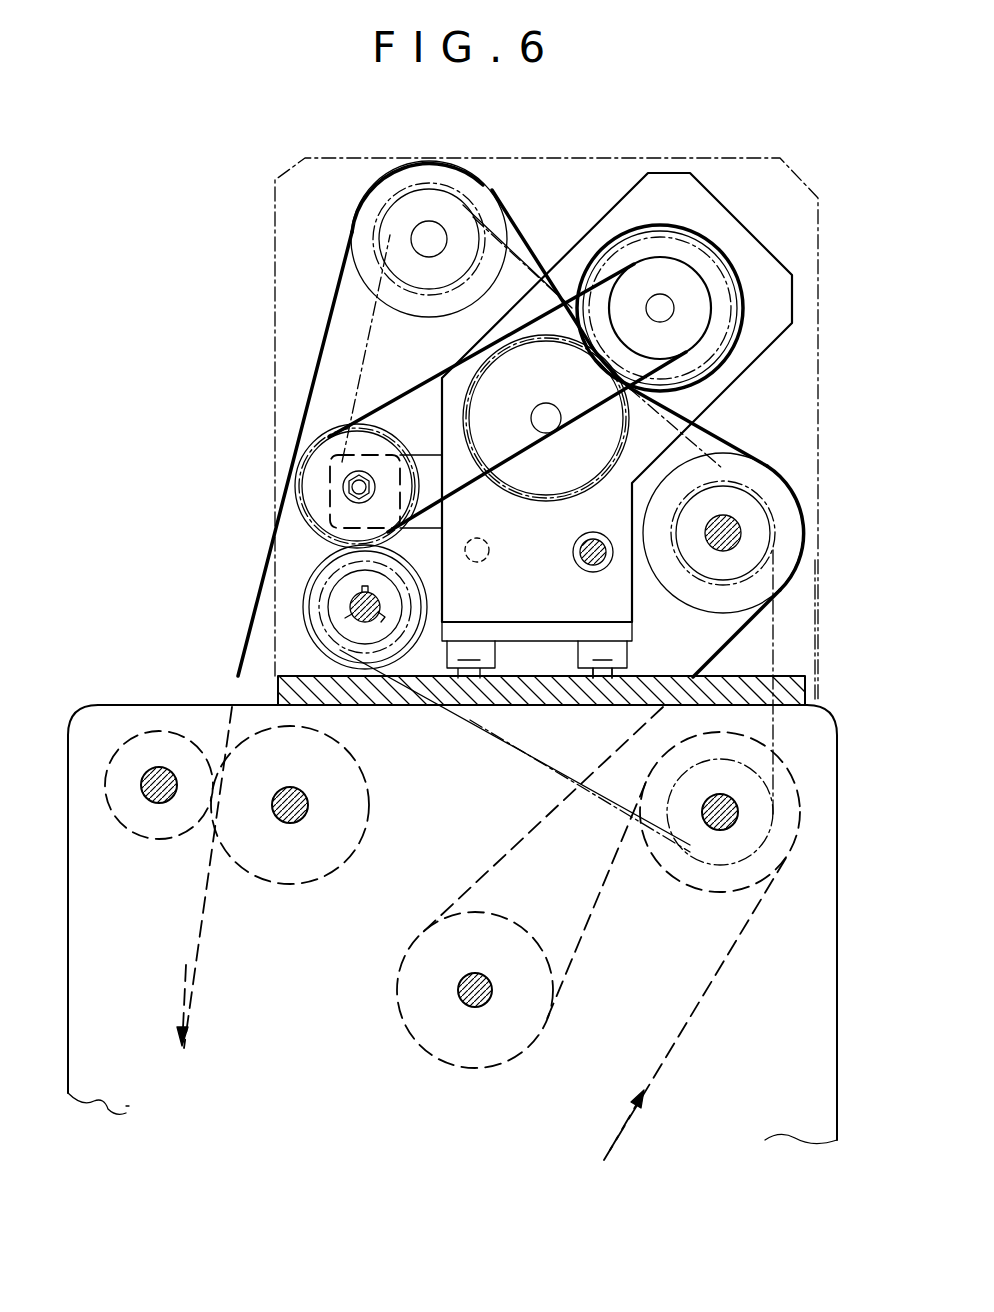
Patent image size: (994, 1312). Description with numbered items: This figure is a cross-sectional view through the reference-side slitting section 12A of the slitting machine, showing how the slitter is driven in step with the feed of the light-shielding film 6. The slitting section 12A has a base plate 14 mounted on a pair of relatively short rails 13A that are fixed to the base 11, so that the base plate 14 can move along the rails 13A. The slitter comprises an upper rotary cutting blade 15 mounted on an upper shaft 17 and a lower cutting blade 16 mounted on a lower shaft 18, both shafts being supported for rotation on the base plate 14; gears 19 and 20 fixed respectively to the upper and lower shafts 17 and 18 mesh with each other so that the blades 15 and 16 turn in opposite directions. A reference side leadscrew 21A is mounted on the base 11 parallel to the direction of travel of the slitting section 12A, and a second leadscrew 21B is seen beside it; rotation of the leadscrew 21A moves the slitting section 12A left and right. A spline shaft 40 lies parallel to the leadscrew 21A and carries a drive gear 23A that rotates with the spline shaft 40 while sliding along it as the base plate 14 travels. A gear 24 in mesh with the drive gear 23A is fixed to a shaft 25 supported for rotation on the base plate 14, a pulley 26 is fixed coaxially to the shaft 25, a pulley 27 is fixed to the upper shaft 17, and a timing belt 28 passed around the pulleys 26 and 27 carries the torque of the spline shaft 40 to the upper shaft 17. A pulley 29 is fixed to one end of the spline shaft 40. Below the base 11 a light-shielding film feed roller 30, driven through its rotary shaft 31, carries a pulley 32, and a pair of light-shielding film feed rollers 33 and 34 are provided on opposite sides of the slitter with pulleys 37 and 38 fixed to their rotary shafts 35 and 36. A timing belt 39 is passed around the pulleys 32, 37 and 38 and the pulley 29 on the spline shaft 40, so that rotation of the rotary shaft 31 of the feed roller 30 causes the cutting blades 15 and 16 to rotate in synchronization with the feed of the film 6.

The light-shielding film 6 is at (342, 268).
The base 11 is at (806, 692).
The slitting section 12A is at (597, 183).
The rails 13A is at (600, 680).
The base plate 14 is at (773, 276).
The upper rotary cutting blade 15 is at (707, 237).
The lower cutting blade 16 is at (546, 418).
The upper shaft 17 is at (675, 308).
The lower shaft 18 is at (531, 418).
The gear 19 is at (596, 400).
The gear 20 is at (630, 418).
The reference side leadscrew 21A is at (586, 562).
The mounting hole 21B is at (478, 562).
The drive gear 23A is at (293, 646).
The gear 24 is at (316, 475).
The shaft 25 is at (346, 487).
The pulley 26 is at (352, 496).
The pulley 27 is at (714, 286).
The timing belt 28 is at (440, 392).
The pulley 29 is at (404, 678).
The light-shielding film feed roller 30 is at (683, 886).
The rotary shaft 31 is at (759, 826).
The pulley 32 is at (762, 855).
The light-shielding film feed roller 33 is at (755, 541).
The light-shielding film feed roller 34 is at (447, 231).
The rotary shaft 35 is at (736, 520).
The rotary shaft 36 is at (445, 236).
The pulley 37 is at (700, 580).
The pulley 38 is at (418, 296).
The timing belt 39 is at (816, 632).
The spline shaft 40 is at (348, 607).